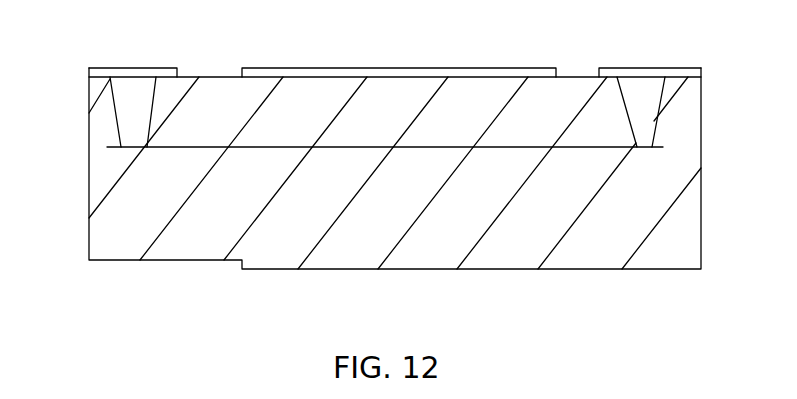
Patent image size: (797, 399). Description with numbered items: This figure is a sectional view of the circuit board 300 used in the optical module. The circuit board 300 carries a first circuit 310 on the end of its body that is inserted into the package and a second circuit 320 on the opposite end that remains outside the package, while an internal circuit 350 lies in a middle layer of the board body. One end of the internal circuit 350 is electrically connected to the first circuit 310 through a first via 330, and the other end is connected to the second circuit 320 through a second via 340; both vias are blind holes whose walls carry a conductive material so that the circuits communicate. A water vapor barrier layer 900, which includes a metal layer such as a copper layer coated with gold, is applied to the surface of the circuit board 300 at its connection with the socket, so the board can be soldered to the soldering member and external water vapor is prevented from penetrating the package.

The circuit board 300 is at (297, 225).
The first circuit 310 is at (640, 72).
The second circuit 320 is at (138, 73).
The first via 330 is at (638, 109).
The second via 340 is at (128, 120).
The internal circuit 350 is at (353, 147).
The water vapor barrier layer 900 is at (402, 73).